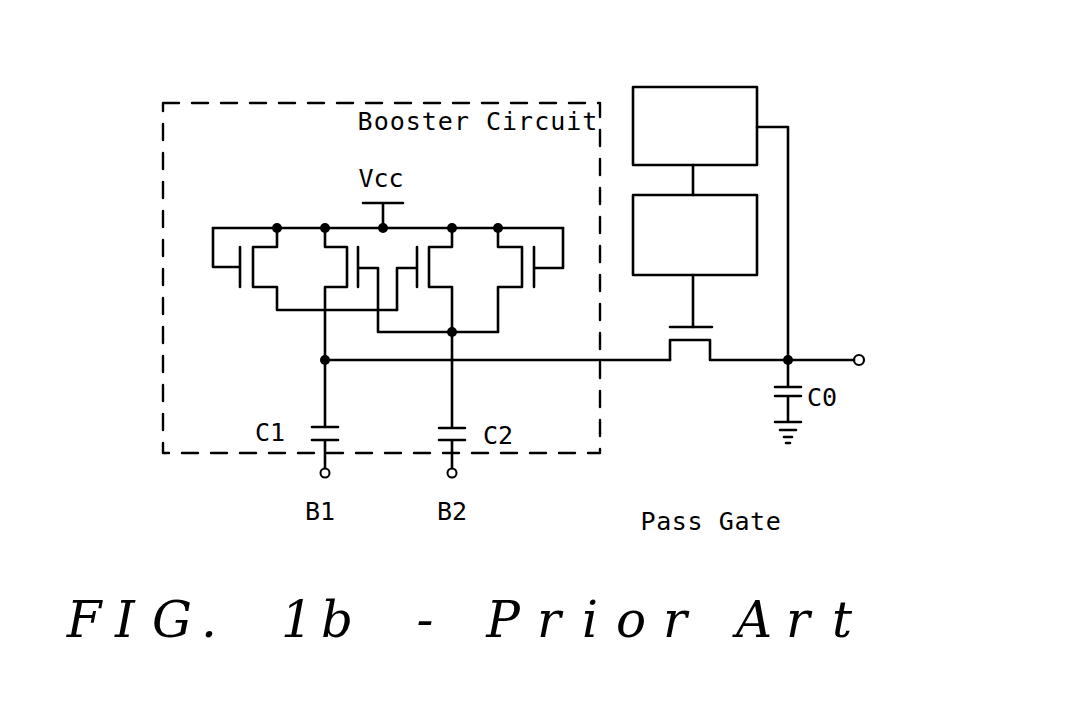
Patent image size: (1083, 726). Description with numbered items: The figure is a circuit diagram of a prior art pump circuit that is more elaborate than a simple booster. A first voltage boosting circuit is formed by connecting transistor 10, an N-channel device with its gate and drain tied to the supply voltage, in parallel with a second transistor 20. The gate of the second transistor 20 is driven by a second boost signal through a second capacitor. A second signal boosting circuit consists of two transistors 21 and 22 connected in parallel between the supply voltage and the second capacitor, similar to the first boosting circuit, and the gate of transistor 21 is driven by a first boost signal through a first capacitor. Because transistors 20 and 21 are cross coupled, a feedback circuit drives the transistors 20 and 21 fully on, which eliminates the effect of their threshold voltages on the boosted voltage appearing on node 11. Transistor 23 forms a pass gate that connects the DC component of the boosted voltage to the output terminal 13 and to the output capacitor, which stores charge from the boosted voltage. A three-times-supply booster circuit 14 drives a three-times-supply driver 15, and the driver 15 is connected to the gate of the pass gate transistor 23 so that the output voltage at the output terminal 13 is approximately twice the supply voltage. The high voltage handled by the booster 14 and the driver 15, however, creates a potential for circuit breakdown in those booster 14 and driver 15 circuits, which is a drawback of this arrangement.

The transistor 10 is at (253, 290).
The second transistor 20 is at (328, 248).
The transistor 21 is at (445, 252).
The transistor 22 is at (505, 290).
The node 11 is at (325, 360).
The 3Vcc booster circuit 14 is at (692, 87).
The 3Vcc driver 15 is at (723, 275).
The pass gate transistor 23 is at (710, 352).
The Vout 13 is at (865, 367).